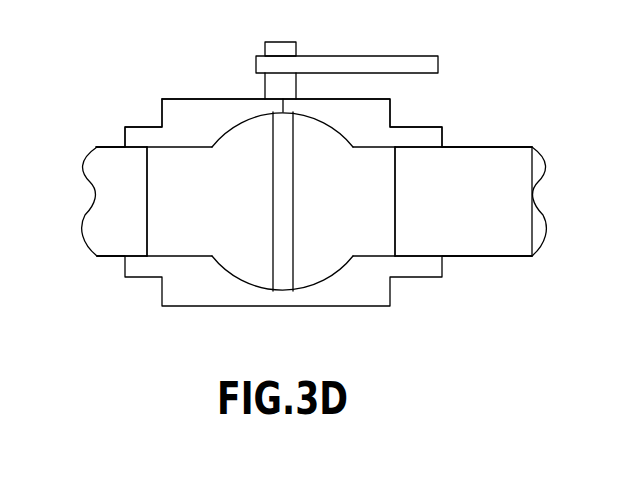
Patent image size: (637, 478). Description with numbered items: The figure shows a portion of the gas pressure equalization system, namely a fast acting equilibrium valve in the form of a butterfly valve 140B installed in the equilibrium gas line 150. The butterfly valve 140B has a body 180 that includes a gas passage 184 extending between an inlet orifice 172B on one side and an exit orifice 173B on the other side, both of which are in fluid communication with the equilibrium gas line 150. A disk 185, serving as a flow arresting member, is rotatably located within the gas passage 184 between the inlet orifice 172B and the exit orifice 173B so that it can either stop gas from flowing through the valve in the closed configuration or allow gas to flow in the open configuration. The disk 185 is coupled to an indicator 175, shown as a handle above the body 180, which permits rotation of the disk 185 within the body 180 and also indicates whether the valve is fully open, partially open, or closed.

The butterfly valve 140B is at (154, 96).
The body 180 is at (197, 99).
The indicator 175 is at (400, 56).
The disk 185 is at (295, 260).
The gas passage 184 is at (238, 257).
The equilibrium gas line 150 is at (492, 257).
The inlet orifice 172B is at (136, 210).
The exit orifice 173B is at (414, 187).